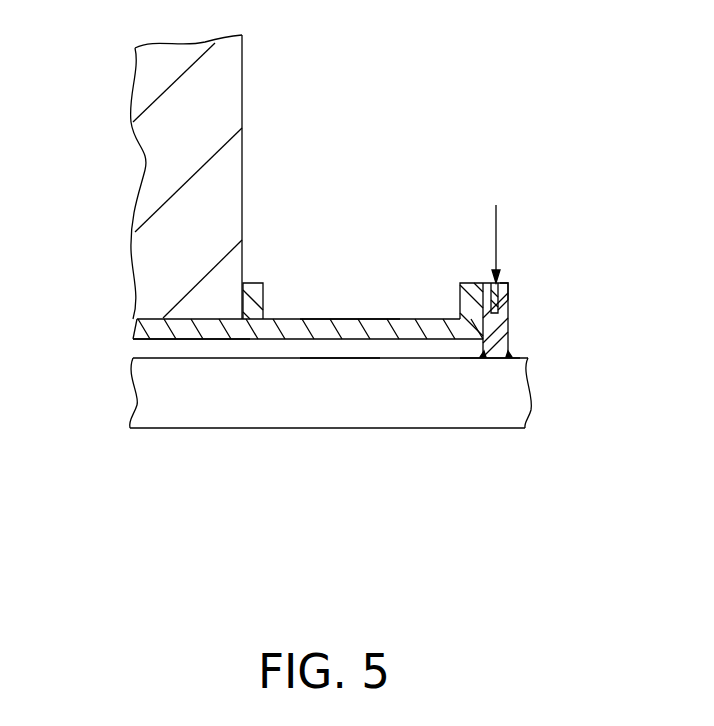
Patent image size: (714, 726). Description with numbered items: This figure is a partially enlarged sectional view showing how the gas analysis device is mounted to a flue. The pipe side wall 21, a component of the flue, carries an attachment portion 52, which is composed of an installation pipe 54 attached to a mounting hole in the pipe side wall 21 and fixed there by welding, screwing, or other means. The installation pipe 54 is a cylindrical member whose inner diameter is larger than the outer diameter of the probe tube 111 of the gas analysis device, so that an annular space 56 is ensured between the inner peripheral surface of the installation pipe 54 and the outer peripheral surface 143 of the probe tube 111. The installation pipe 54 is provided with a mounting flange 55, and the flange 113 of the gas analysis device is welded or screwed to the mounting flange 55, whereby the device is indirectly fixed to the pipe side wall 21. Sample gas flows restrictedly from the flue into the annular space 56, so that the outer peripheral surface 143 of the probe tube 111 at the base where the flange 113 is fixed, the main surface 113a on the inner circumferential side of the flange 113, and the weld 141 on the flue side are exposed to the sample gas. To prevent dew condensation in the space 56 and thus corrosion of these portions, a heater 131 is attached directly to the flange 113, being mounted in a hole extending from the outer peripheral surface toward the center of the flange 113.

The pipe side wall 21 is at (161, 150).
The attachment portion 52 is at (312, 305).
The installation pipe 54 is at (347, 322).
The annular space 56 is at (124, 348).
The mounting flange 55 is at (470, 303).
The flange 113 is at (506, 307).
The main surface 113a is at (461, 246).
The heater 131 is at (503, 291).
The probe tube 111 is at (232, 452).
The outer peripheral surface 143 is at (352, 359).
The weld 141 is at (479, 353).